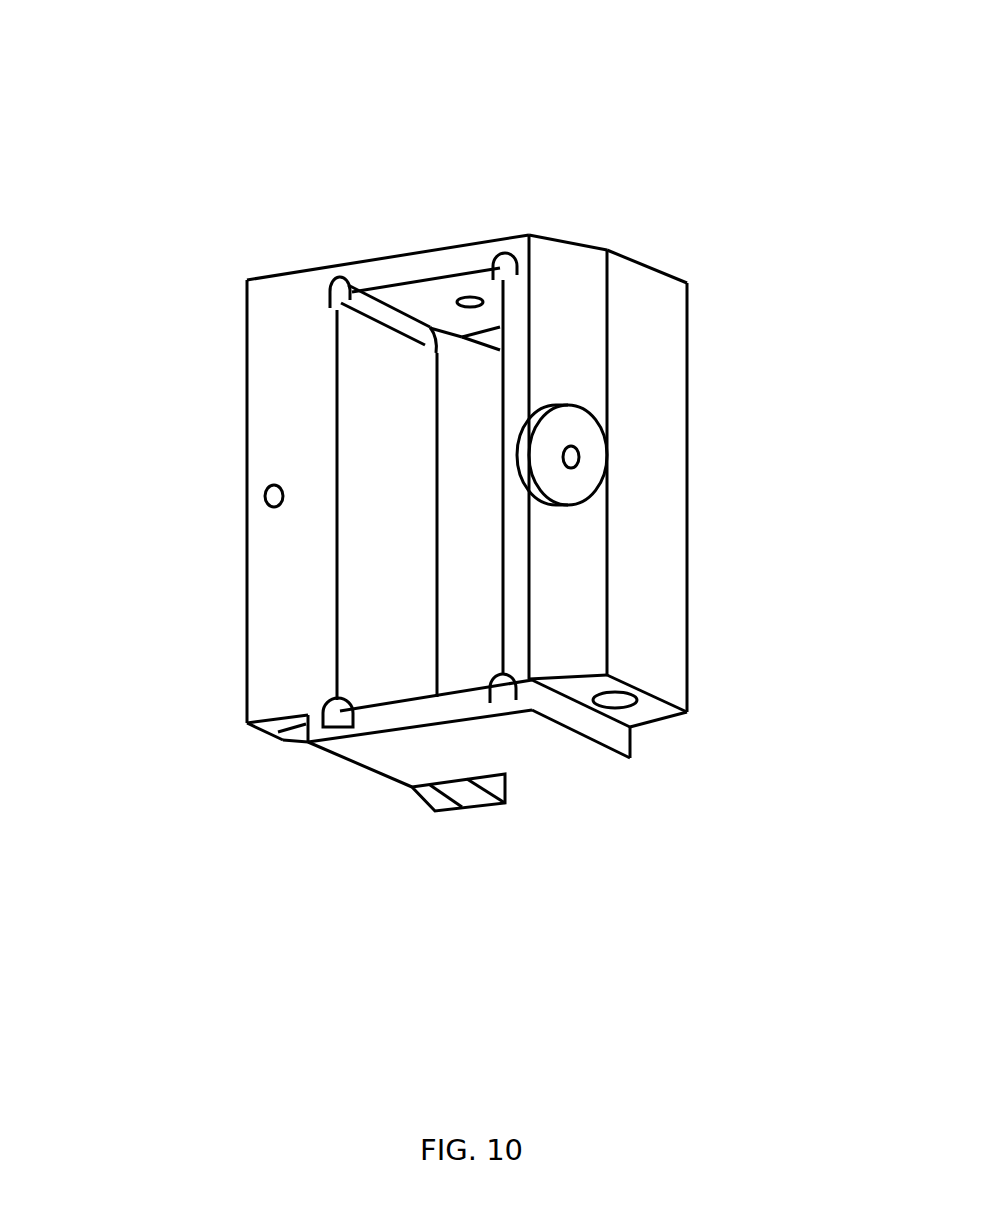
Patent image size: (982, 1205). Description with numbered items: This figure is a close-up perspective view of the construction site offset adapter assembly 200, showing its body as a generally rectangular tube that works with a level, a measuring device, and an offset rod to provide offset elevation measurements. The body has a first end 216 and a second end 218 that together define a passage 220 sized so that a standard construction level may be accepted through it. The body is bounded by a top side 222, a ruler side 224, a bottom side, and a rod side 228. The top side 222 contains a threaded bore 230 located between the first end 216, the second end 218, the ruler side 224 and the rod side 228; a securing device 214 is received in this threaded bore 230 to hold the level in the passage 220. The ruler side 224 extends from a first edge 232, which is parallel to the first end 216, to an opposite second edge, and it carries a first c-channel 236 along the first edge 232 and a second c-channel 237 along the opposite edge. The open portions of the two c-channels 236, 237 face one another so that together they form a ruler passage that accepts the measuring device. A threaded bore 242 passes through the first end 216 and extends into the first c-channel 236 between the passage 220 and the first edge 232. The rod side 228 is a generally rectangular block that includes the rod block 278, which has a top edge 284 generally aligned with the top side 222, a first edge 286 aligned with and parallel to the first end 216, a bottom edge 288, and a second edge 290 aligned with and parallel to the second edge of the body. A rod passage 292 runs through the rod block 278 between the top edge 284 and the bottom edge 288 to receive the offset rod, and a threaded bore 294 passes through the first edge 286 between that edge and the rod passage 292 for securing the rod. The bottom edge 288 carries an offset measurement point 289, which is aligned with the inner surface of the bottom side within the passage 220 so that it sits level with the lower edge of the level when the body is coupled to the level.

The construction site offset adapter assembly 200 is at (446, 135).
The securing device 214 is at (640, 117).
The first end 216 is at (288, 303).
The second end 218 is at (576, 784).
The passage 220 is at (465, 405).
The top side 222 is at (473, 240).
The ruler side 224 is at (240, 412).
The rod side 228 is at (620, 737).
The threaded bore 230 is at (463, 299).
The first edge 232 is at (246, 576).
The first c-channel 236 is at (302, 737).
The second c-channel 237 is at (432, 803).
The threaded bore 242 is at (266, 492).
The rod block 278 is at (662, 563).
The top edge 284 is at (638, 260).
The first edge 286 is at (607, 344).
The bottom edge 288 is at (640, 697).
The offset measurement point 289 is at (662, 709).
The second edge 290 is at (687, 303).
The rod passage 292 is at (622, 702).
The threaded bore 294 is at (575, 457).